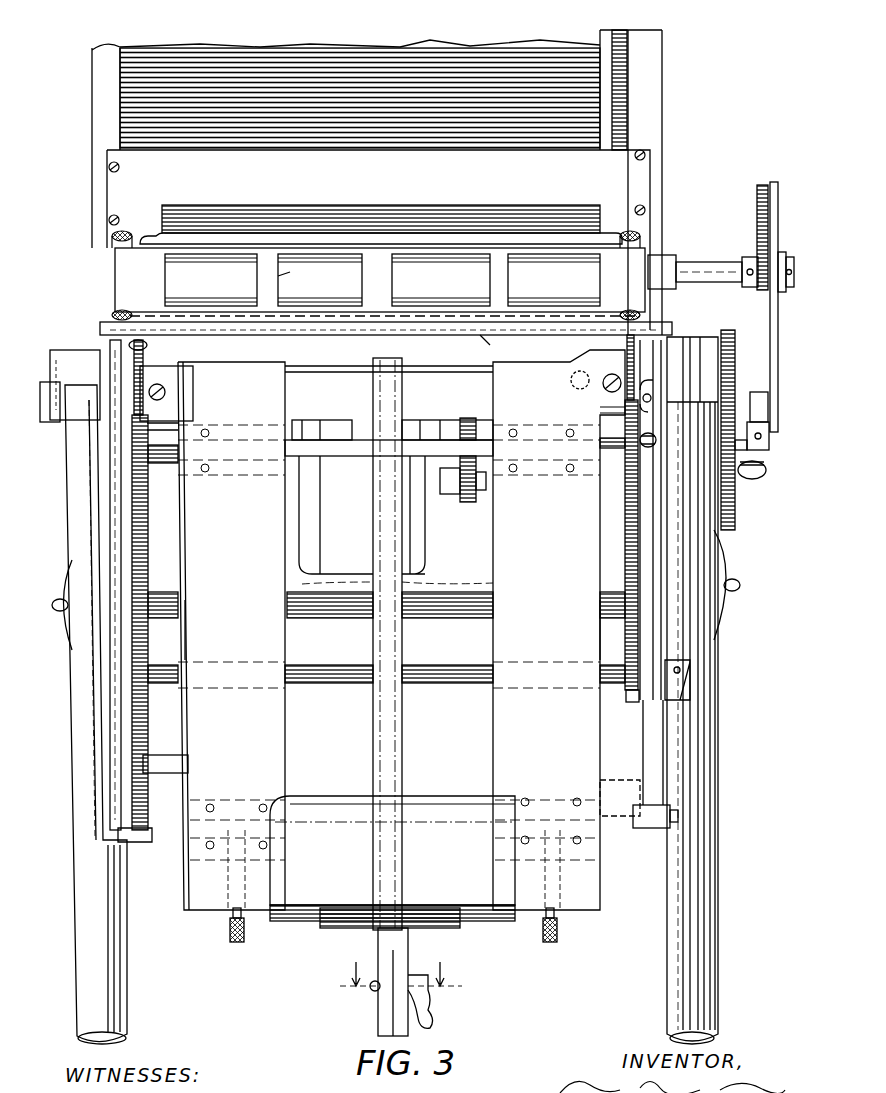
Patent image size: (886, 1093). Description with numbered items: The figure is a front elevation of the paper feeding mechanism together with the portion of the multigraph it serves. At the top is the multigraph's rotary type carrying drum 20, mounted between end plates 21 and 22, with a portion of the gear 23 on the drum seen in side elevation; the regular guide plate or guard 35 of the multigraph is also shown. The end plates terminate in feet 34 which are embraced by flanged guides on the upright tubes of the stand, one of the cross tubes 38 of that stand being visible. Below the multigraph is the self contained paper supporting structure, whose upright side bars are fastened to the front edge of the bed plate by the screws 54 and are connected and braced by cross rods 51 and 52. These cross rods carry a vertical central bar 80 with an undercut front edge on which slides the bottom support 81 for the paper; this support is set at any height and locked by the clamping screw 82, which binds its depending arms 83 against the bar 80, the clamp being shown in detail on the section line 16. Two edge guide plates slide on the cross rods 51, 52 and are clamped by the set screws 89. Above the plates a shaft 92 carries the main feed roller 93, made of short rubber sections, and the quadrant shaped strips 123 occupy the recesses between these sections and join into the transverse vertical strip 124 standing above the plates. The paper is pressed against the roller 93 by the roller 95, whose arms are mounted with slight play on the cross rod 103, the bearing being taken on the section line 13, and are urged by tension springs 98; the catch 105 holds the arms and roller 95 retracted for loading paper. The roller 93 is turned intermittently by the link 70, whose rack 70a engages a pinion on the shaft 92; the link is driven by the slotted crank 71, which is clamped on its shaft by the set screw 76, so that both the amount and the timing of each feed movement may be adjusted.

The section line 13— 13 is at (668, 738).
The section line 16— 16 is at (395, 980).
The rotary type carrying drum 20 is at (522, 58).
The end plate 21 is at (106, 148).
The end plate 22 is at (631, 182).
The gear 23 is at (627, 52).
The feet 34 is at (70, 386).
The guard 35 is at (548, 204).
The cross tube 38 is at (472, 600).
The cross rod 51 is at (346, 452).
The cross rod 52 is at (630, 808).
The screws 54 is at (180, 375).
The link 70 is at (770, 320).
The rack 70a is at (757, 218).
The crank 71 is at (770, 445).
The set screw 76 is at (764, 474).
The vertical central bar 80 is at (402, 746).
The bottom support 81 is at (392, 862).
The clamping screw 82 is at (432, 1016).
The depending arms 83 is at (378, 1022).
The set screws 89 is at (230, 930).
The shaft 92 is at (712, 270).
The main feed roller 93 is at (380, 282).
The roller 95 is at (496, 348).
The tension springs 98 is at (625, 488).
The cross rod 103 is at (470, 664).
The catch 105 is at (655, 684).
The strips 123 is at (268, 278).
The vertical strip 124 is at (452, 336).